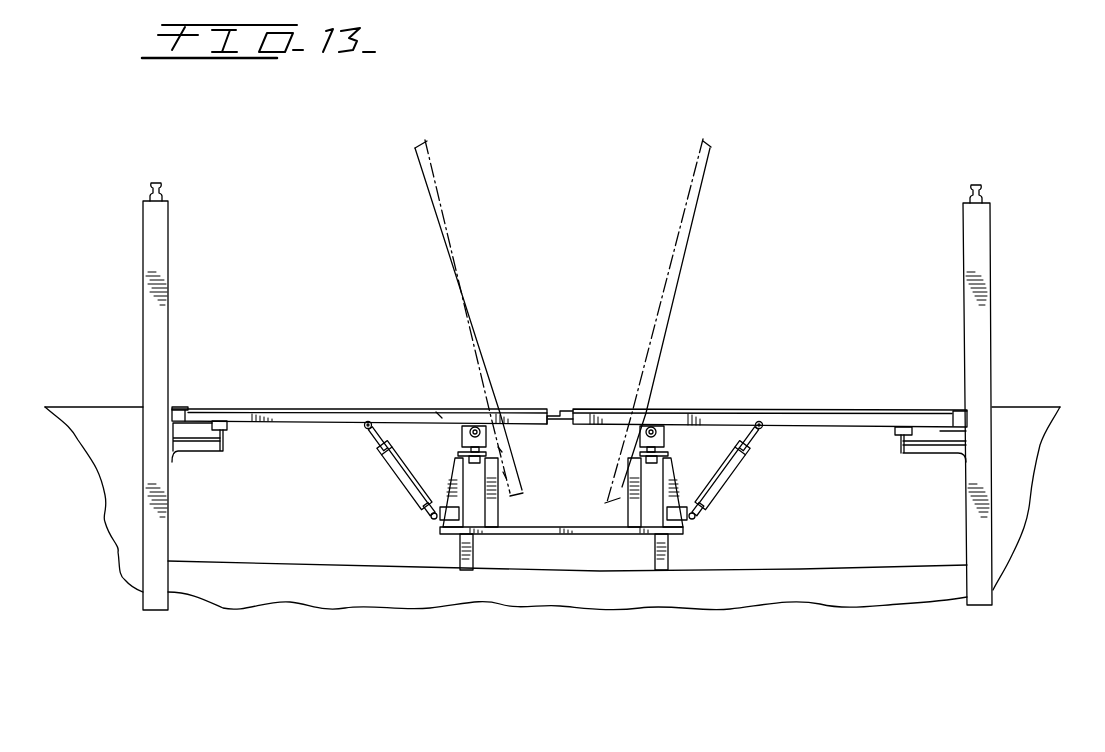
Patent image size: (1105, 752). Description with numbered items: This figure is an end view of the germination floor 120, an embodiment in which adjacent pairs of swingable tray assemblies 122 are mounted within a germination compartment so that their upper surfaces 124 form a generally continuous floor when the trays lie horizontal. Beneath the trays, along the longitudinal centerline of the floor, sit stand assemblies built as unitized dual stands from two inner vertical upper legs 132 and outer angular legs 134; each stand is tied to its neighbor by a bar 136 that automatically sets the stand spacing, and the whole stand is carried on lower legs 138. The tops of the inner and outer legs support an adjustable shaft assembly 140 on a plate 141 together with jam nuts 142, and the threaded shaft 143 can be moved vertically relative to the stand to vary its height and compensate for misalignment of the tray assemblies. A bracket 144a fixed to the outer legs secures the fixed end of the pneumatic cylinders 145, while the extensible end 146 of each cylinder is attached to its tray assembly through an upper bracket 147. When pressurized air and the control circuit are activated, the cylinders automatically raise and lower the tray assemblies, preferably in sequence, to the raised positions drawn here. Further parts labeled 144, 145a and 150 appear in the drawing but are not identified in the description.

The germination floor 120 is at (740, 400).
The swingable tray assemblies 122 is at (223, 400).
The upper surfaces 124 is at (281, 406).
The inner vertical upper legs 132 is at (498, 508).
The outer angular legs 134 is at (453, 485).
The bar 136 is at (568, 526).
The lower legs 138 is at (460, 556).
The adjustable shaft assembly 140 is at (468, 469).
The plate 141 is at (438, 418).
The jam nuts 142 is at (500, 446).
The threaded shaft 143 is at (504, 472).
The lift arm 144 is at (459, 422).
The bracket 144a is at (433, 516).
The pneumatic cylinders 145 is at (404, 477).
The cylinder anchor pin 145a is at (694, 519).
The extensible end 146 is at (378, 440).
The upper bracket 147 is at (362, 426).
The pivot bracket 150 is at (482, 425).